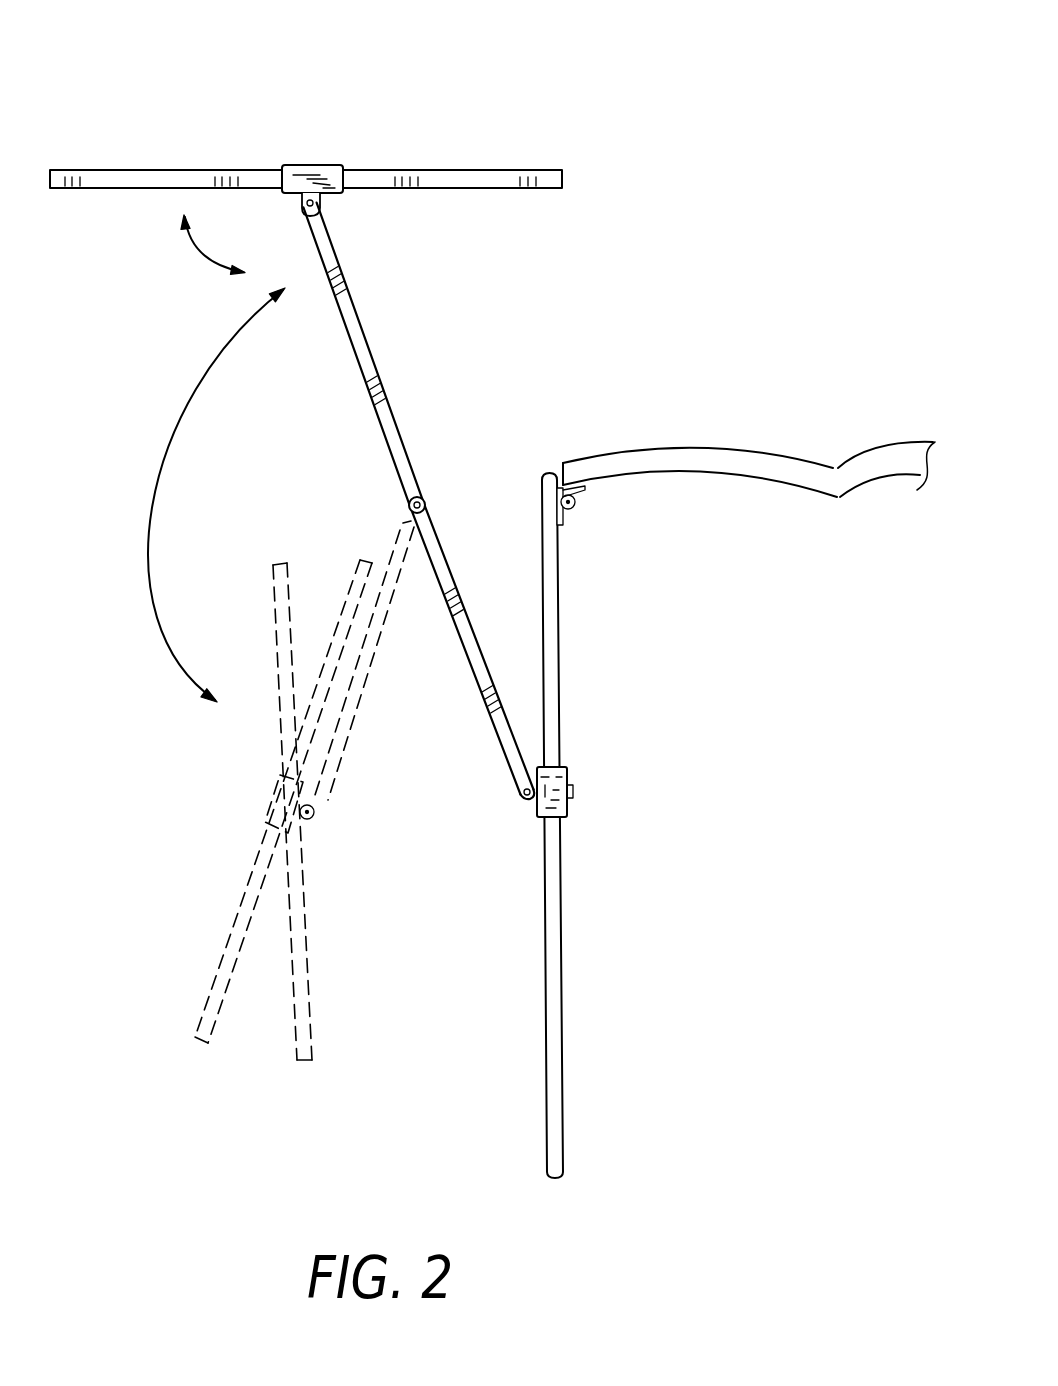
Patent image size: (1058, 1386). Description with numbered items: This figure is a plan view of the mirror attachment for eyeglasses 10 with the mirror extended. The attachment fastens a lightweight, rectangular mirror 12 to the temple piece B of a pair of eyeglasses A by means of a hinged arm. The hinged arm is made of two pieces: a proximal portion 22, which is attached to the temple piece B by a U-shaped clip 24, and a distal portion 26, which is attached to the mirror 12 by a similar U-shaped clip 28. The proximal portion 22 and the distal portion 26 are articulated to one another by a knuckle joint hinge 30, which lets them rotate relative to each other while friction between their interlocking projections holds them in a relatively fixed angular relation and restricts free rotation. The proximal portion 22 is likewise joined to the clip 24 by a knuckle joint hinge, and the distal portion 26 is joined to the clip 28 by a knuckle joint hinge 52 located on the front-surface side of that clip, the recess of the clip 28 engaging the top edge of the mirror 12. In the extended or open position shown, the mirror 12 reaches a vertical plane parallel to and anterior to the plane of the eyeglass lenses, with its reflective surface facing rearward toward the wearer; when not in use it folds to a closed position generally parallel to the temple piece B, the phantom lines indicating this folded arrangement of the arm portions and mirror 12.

The mirror attachment for eyeglasses 10 is at (411, 421).
The mirror 12 is at (490, 173).
The proximal portion 22 is at (470, 670).
The U-shaped clip 24 is at (567, 774).
The distal portion 26 is at (353, 355).
The U-shaped clip 28 is at (317, 167).
The knuckle joint hinge 30 is at (428, 500).
The knuckle joint hinge 52 is at (323, 205).
The eyeglasses A is at (695, 443).
The temple piece B is at (561, 692).